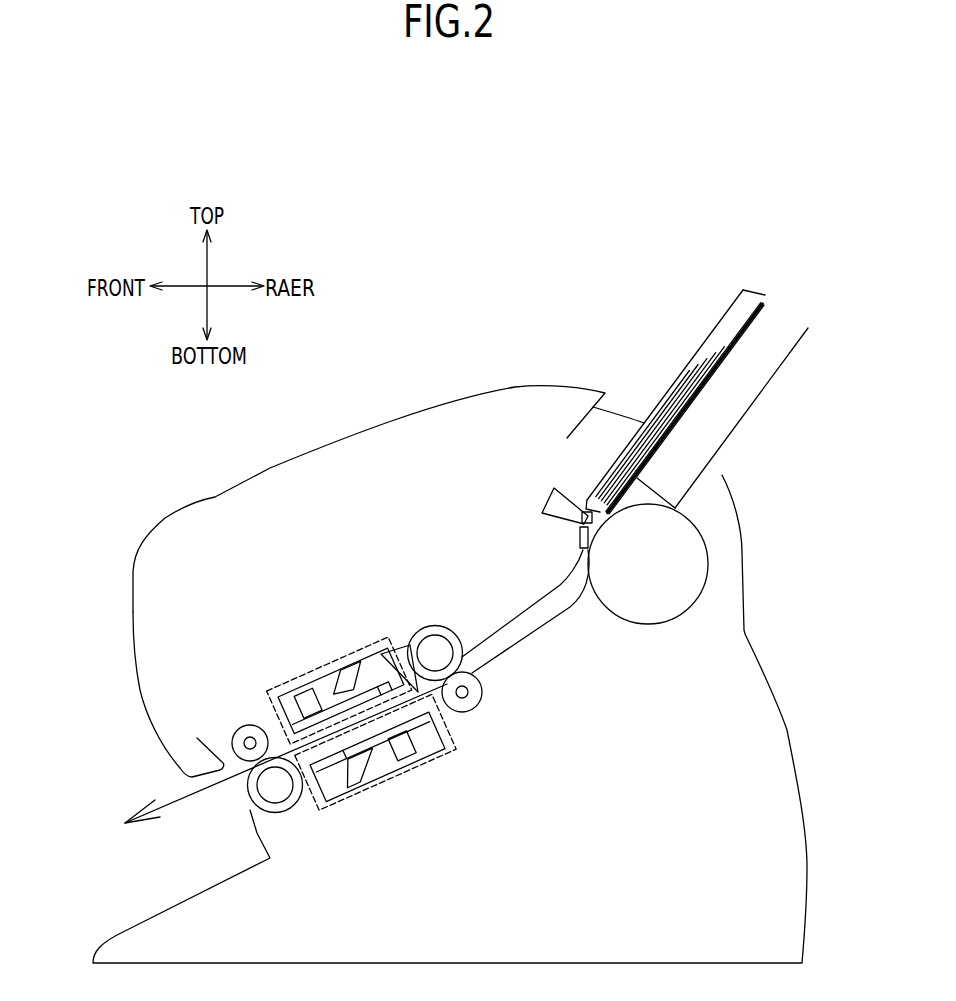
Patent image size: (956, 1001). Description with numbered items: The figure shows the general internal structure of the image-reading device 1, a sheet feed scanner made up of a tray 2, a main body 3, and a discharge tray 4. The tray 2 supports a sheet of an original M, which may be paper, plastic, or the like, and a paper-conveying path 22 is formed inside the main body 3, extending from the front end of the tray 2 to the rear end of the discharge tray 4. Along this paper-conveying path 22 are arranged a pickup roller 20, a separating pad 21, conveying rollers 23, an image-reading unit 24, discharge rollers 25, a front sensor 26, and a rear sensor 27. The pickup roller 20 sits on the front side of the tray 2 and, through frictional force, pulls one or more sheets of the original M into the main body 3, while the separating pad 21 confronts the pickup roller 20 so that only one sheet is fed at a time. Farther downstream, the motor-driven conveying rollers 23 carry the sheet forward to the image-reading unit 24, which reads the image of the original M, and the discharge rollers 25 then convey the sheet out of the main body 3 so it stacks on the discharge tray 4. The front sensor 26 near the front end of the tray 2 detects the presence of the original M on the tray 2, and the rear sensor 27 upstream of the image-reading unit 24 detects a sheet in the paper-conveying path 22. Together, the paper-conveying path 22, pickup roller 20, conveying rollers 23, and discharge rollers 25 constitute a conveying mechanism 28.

The image-reading device 1 is at (459, 332).
The tray 2 is at (748, 378).
The main body 3 is at (523, 407).
The discharge tray 4 is at (170, 907).
The original M is at (690, 370).
The pickup roller 20 is at (650, 605).
The separating pad 21 is at (580, 540).
The paper-conveying path 22 is at (532, 608).
The conveying rollers 23 is at (463, 688).
The image-reading unit 24 is at (316, 668).
The discharge rollers 25 is at (273, 780).
The front sensor 26 is at (555, 505).
The rear sensor 27 is at (392, 645).
The conveying mechanism 28 is at (352, 508).